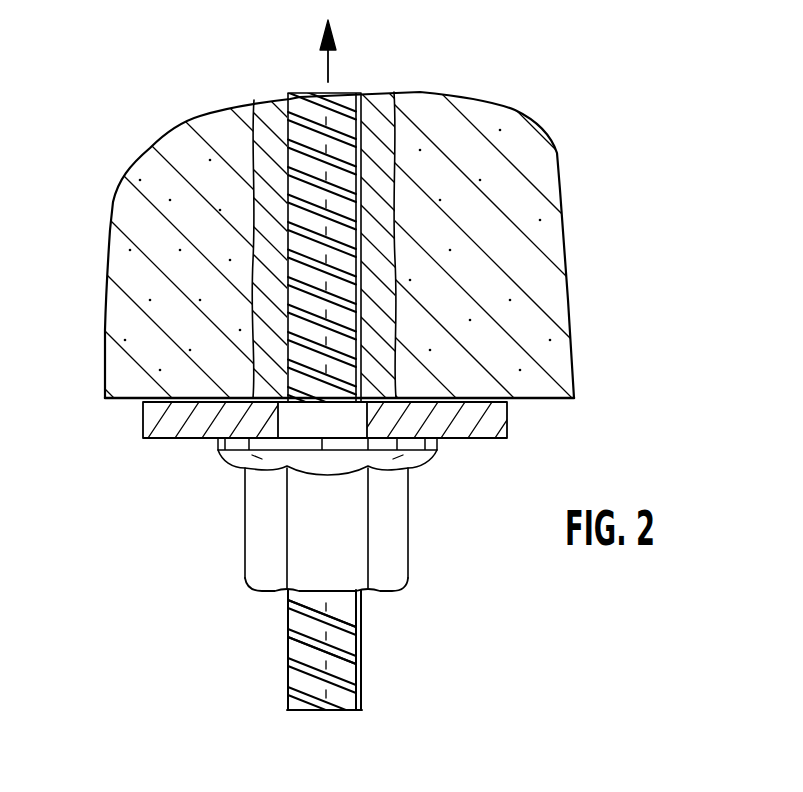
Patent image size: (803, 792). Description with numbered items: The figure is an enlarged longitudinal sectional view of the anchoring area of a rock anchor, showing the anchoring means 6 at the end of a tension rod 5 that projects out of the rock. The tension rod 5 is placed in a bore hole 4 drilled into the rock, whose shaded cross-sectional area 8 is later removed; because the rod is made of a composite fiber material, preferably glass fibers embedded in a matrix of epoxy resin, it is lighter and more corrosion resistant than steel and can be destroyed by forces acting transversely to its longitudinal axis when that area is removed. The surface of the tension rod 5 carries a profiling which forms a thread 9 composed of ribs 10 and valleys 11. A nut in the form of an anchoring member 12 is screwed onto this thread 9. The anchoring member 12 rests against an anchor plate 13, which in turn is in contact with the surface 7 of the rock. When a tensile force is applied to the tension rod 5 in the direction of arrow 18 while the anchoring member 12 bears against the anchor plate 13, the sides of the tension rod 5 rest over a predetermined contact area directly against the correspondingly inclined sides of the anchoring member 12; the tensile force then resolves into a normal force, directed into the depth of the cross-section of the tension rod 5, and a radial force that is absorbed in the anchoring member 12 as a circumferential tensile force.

The bore hole 4 is at (378, 112).
The tension rod 5 is at (297, 157).
The anchoring means 6 is at (390, 678).
The surface of the rock 7 is at (546, 398).
The shaded cross-sectional area 8 is at (115, 296).
The thread 9 is at (380, 627).
The ribs 10 is at (288, 637).
The valleys 11 is at (292, 615).
The anchoring member 12 is at (400, 532).
The anchor plate 13 is at (176, 438).
The arrow 18 is at (328, 75).